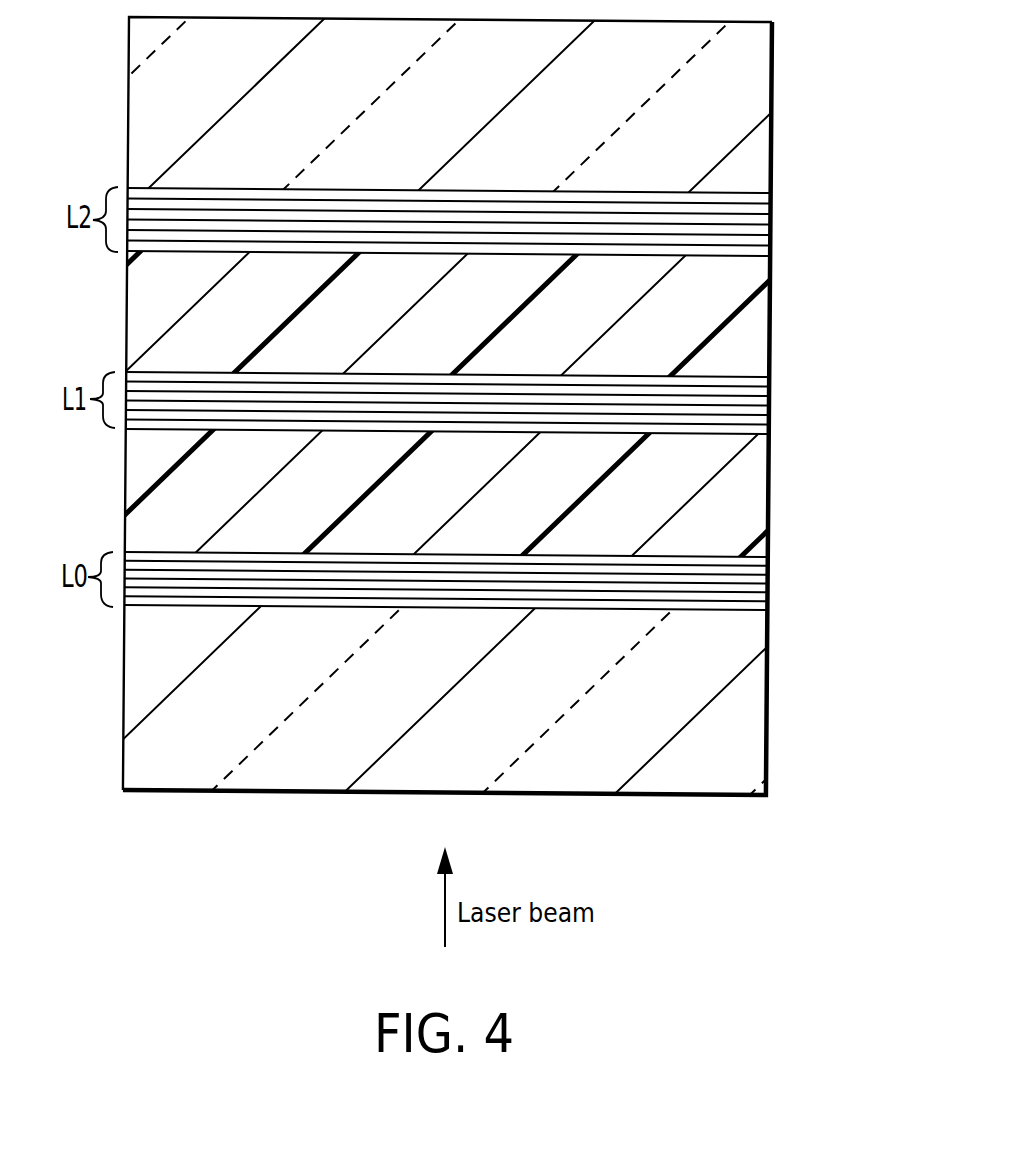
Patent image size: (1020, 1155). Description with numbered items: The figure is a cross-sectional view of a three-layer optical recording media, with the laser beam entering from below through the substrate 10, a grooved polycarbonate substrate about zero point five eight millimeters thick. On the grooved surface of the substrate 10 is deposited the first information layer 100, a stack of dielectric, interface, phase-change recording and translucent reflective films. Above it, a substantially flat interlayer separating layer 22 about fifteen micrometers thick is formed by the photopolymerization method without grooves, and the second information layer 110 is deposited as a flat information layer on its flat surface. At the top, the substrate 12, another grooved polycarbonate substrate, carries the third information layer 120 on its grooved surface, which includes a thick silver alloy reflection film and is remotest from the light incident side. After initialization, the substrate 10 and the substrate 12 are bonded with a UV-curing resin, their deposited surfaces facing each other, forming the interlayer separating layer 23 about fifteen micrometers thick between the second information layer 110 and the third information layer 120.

The substrate 10 is at (768, 689).
The substrate 12 is at (773, 126).
The interlayer separating layer 22 is at (770, 487).
The interlayer separating layer 23 is at (771, 320).
The L0 layer 100 is at (769, 588).
The L1 layer 110 is at (771, 406).
The L2 layer 120 is at (773, 228).